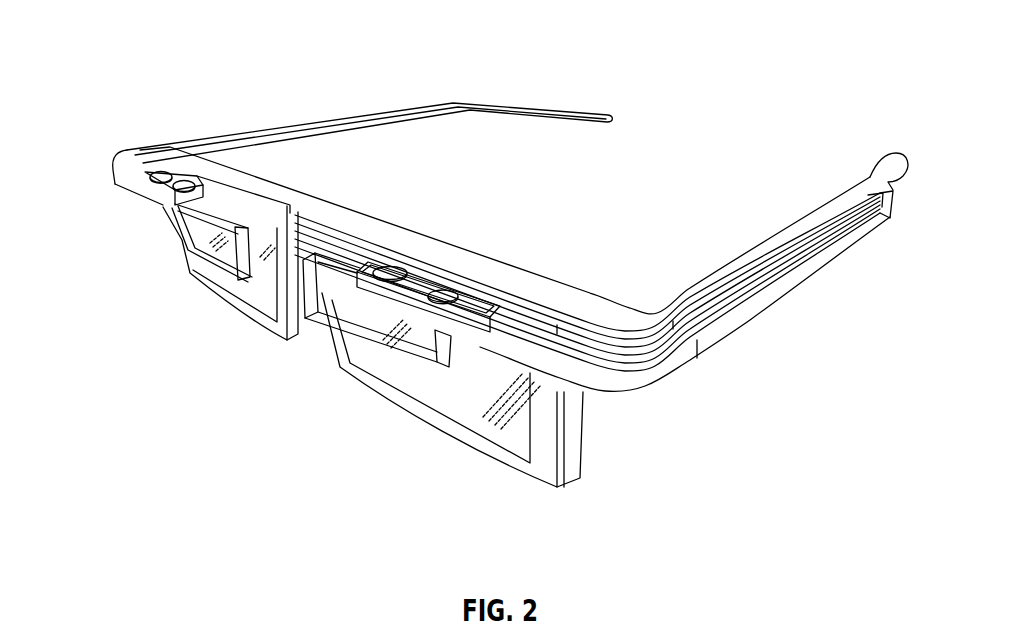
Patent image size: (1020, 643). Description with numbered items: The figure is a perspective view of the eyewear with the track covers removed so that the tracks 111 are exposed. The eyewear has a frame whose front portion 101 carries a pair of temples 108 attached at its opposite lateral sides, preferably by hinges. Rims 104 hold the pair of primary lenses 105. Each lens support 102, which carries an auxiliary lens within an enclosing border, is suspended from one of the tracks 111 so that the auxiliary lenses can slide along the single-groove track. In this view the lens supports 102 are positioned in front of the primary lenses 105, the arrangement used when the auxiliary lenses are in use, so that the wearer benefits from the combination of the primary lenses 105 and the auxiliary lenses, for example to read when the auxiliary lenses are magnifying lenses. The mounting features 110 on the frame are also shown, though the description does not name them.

The front portion 101 is at (336, 188).
The lens support 102 is at (163, 222).
The rim 104 is at (191, 272).
The primary lens 105 is at (265, 292).
The temple 108 is at (400, 82).
The mounting boss 110 is at (158, 173).
The track 111 is at (500, 320).